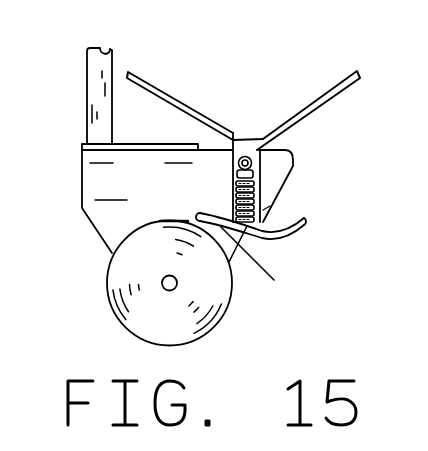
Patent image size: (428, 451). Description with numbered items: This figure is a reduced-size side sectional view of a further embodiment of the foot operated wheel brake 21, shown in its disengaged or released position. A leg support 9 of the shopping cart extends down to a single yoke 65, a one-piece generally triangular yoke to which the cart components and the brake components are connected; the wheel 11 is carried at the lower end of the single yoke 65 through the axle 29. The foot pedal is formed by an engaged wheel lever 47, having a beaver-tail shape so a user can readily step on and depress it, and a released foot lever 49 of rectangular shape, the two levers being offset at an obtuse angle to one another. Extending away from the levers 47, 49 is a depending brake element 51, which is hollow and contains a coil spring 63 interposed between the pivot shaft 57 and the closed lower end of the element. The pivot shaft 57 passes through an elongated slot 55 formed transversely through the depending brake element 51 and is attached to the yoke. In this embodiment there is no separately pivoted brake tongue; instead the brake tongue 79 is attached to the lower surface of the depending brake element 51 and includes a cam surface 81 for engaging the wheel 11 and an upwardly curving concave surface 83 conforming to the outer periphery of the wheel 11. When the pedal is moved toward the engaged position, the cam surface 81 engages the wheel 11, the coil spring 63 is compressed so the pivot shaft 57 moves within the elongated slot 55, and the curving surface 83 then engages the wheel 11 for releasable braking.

The leg support 9 is at (101, 88).
The wheel 11 is at (143, 317).
The foot operated wheel brake 21 is at (243, 80).
The axle 29 is at (170, 291).
The engaged wheel lever 47 is at (321, 93).
The released foot lever 49 is at (181, 99).
The depending brake element 51 is at (269, 206).
The elongated slot 55 is at (262, 148).
The pivot shaft 57 is at (252, 166).
The coil spring 63 is at (261, 189).
The single yoke 65 is at (84, 233).
The brake tongue 79 is at (295, 236).
The cam surface 81 is at (238, 232).
The upwardly curving surface 83 is at (261, 256).